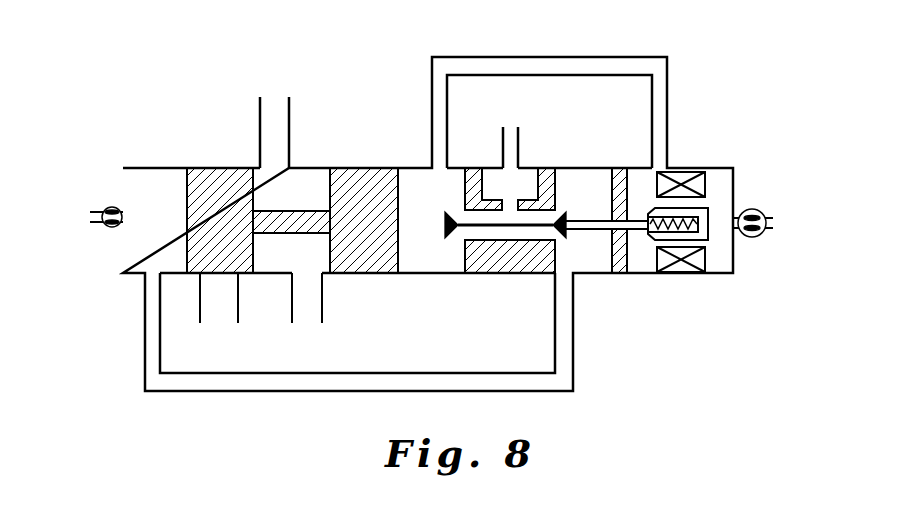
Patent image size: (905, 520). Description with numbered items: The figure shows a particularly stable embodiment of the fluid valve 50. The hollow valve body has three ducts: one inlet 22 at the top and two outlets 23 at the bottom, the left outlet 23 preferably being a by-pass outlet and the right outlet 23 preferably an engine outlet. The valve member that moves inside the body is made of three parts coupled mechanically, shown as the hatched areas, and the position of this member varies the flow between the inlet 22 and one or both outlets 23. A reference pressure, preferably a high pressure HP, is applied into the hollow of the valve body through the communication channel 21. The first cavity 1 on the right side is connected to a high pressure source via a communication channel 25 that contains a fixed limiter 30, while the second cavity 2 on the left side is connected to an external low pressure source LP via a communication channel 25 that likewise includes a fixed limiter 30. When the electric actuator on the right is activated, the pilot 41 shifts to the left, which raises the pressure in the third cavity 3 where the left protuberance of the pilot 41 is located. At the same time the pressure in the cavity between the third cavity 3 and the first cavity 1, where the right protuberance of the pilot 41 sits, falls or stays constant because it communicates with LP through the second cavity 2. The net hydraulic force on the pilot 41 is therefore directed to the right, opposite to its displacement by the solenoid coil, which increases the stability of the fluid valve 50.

The fluid valve 50 is at (179, 95).
The first cavity 1 is at (725, 209).
The second cavity 2 is at (162, 230).
The third cavity 3 is at (429, 234).
The communication channel 21 is at (512, 147).
The inlet 22 is at (274, 121).
The outlets 23 is at (261, 309).
The communication channel 25 is at (95, 210).
The fixed limiter 30 is at (112, 228).
The pilot 41 is at (582, 230).